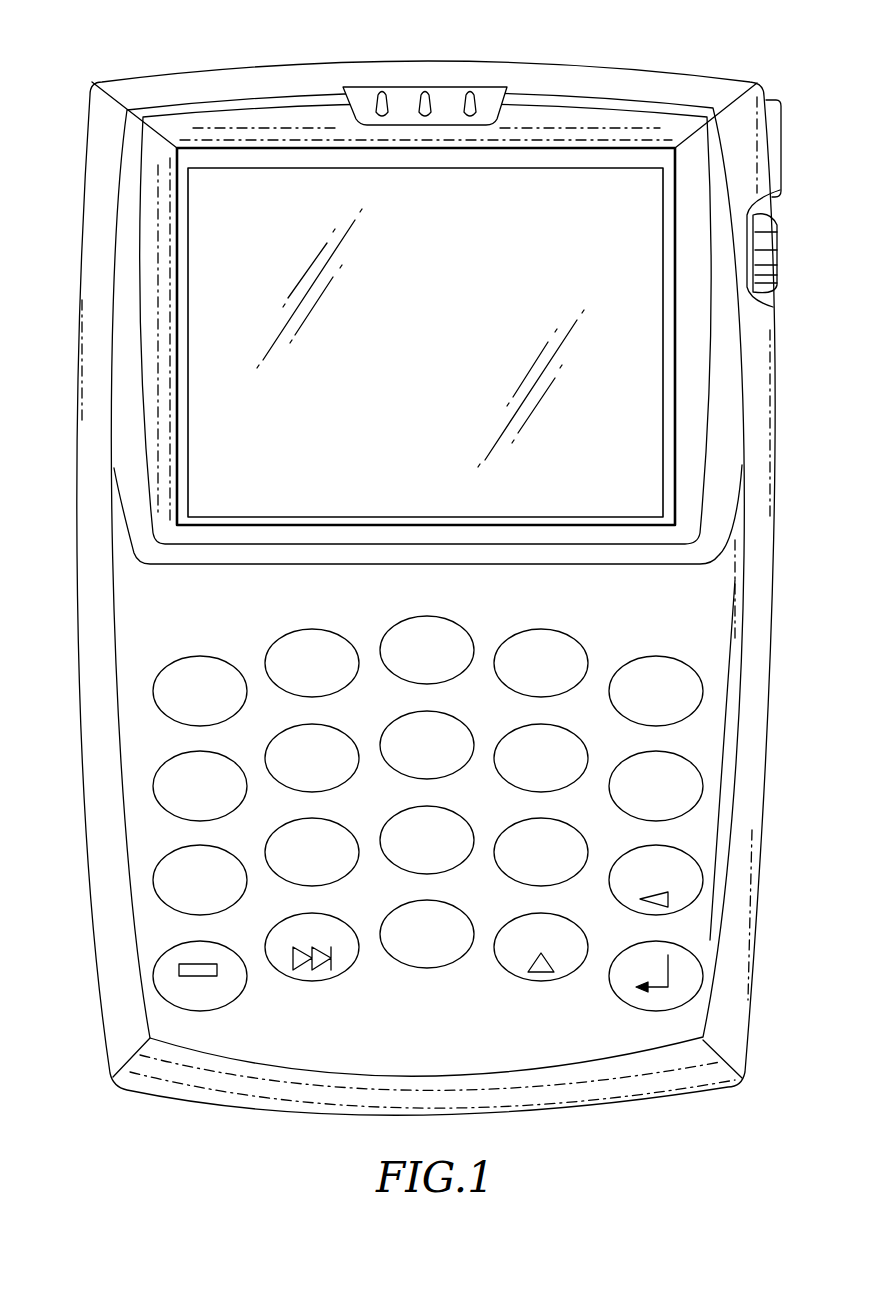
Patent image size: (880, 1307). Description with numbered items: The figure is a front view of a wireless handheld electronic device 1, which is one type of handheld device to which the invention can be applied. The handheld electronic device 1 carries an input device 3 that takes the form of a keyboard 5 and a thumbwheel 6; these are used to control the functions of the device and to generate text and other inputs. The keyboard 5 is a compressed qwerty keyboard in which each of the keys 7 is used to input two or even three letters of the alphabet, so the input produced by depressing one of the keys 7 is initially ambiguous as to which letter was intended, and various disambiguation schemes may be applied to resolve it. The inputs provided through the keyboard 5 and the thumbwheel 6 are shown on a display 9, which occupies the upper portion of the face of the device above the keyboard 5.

The wireless handheld electronic device 1 is at (38, 683).
The input device 3 is at (713, 609).
The keyboard 5 is at (428, 875).
The thumbwheel 6 is at (777, 242).
The keys 7 is at (557, 632).
The display 9 is at (617, 192).